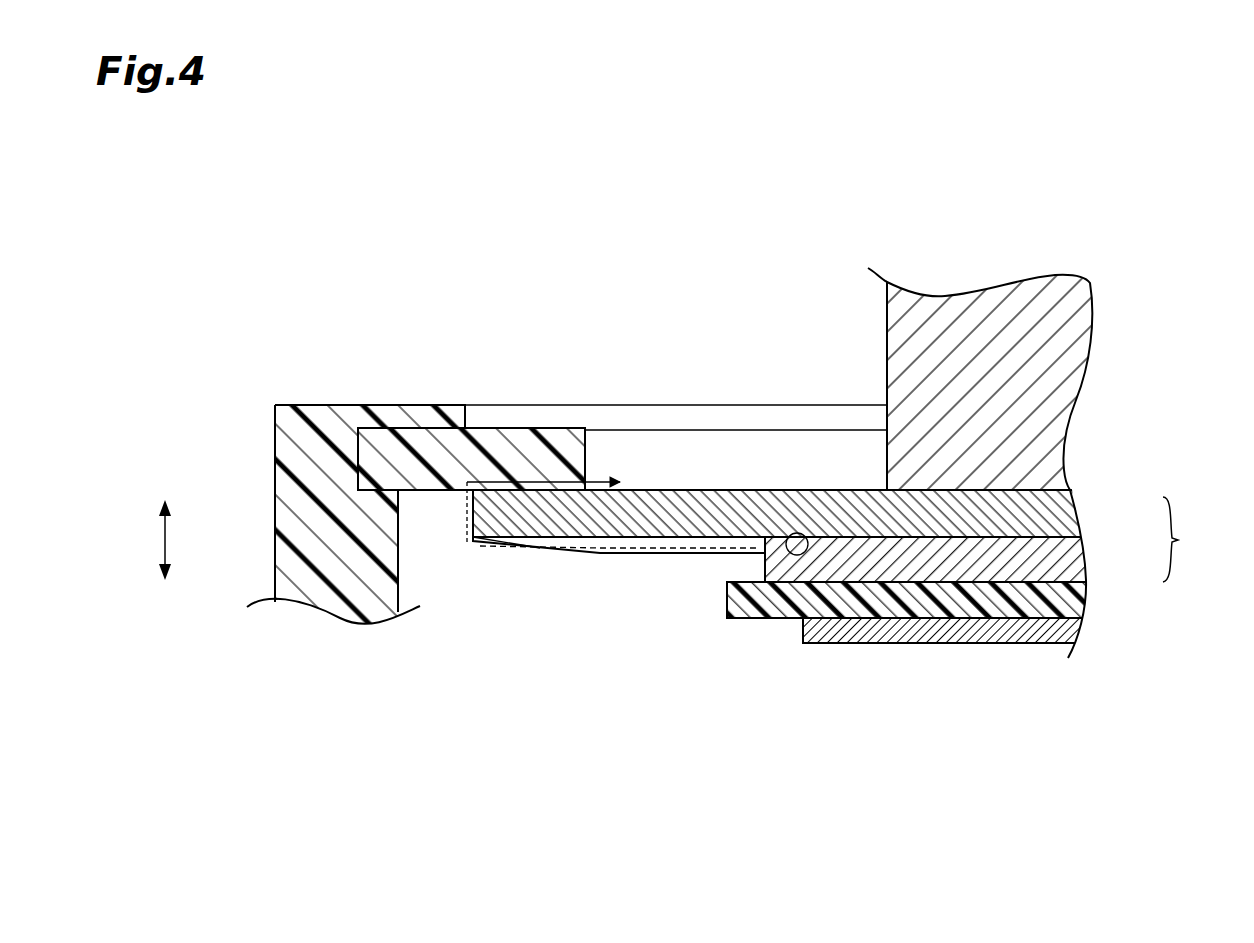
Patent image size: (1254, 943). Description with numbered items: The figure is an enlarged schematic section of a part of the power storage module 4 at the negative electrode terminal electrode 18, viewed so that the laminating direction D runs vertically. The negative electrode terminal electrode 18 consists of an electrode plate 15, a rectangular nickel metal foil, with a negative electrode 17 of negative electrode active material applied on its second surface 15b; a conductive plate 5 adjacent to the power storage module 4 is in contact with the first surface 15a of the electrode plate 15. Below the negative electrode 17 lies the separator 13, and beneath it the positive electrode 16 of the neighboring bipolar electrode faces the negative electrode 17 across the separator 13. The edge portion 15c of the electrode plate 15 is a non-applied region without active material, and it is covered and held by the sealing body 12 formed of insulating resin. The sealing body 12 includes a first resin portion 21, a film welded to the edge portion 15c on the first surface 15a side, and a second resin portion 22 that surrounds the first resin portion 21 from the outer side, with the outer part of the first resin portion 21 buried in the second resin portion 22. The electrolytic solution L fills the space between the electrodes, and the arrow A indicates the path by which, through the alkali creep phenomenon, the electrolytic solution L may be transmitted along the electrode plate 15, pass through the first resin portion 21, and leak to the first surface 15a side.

The power storage module 4 is at (1189, 181).
The conductive plate 5 is at (1000, 295).
The sealing body 12 is at (335, 401).
The separator 13 is at (783, 610).
The electrode plate 15 is at (1065, 513).
The first surface 15a is at (865, 488).
The second surface 15b is at (788, 533).
The edge portion 15c is at (472, 515).
The positive electrode 16 is at (968, 643).
The negative electrode 17 is at (1065, 555).
The negative electrode terminal electrode 18 is at (1188, 539).
The first resin portion 21 is at (505, 445).
The second resin portion 22 is at (283, 518).
The arrow A is at (473, 543).
The electrolytic solution L is at (652, 553).
The laminating direction D is at (162, 540).